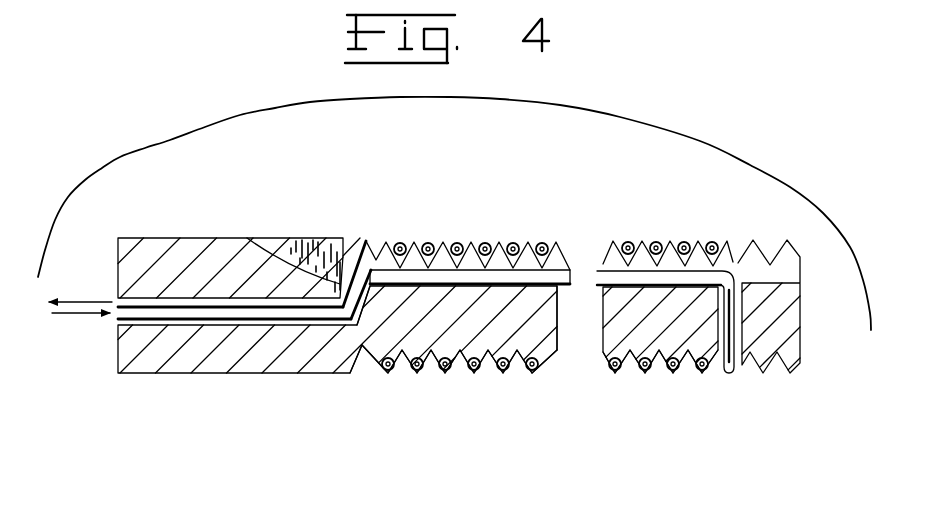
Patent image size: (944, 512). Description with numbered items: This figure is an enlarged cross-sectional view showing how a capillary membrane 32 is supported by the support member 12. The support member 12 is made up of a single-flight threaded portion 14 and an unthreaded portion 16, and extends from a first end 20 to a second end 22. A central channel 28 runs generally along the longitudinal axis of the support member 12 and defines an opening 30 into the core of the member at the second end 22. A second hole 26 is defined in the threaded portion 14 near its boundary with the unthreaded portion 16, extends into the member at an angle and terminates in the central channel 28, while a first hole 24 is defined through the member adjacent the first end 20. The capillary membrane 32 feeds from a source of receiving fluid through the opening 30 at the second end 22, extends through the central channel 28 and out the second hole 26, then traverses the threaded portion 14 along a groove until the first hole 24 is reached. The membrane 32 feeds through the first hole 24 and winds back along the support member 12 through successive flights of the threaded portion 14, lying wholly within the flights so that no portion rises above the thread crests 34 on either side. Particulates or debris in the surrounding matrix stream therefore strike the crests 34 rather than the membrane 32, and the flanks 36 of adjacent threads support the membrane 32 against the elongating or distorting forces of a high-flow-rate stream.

The support member 12 is at (346, 234).
The single-flight threaded portion 14 is at (563, 258).
The unthreaded portion 16 is at (166, 232).
The first end 20 is at (802, 311).
The second end 22 is at (118, 358).
The first hole 24 is at (734, 266).
The second hole 26 is at (364, 250).
The central channel 28 is at (213, 300).
The opening 30 is at (119, 318).
The capillary membrane 32 is at (434, 240).
The thread crests 34 is at (510, 242).
The flanks 36 is at (367, 358).